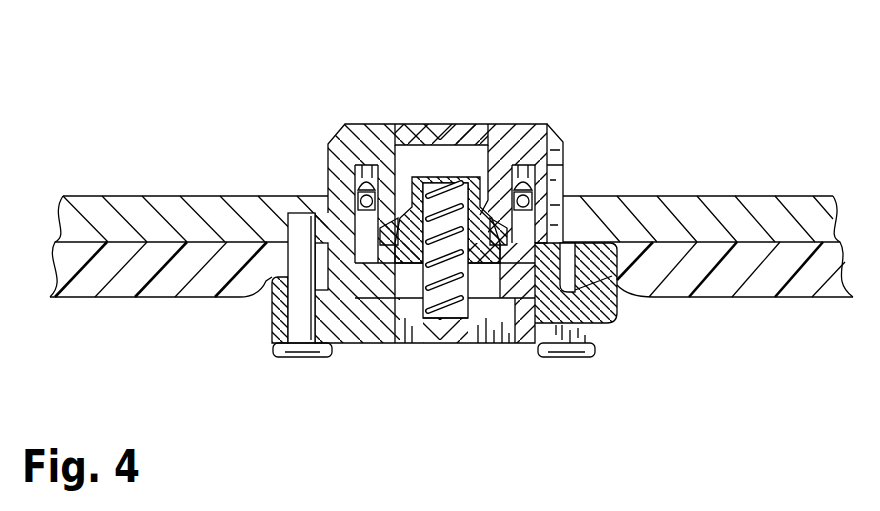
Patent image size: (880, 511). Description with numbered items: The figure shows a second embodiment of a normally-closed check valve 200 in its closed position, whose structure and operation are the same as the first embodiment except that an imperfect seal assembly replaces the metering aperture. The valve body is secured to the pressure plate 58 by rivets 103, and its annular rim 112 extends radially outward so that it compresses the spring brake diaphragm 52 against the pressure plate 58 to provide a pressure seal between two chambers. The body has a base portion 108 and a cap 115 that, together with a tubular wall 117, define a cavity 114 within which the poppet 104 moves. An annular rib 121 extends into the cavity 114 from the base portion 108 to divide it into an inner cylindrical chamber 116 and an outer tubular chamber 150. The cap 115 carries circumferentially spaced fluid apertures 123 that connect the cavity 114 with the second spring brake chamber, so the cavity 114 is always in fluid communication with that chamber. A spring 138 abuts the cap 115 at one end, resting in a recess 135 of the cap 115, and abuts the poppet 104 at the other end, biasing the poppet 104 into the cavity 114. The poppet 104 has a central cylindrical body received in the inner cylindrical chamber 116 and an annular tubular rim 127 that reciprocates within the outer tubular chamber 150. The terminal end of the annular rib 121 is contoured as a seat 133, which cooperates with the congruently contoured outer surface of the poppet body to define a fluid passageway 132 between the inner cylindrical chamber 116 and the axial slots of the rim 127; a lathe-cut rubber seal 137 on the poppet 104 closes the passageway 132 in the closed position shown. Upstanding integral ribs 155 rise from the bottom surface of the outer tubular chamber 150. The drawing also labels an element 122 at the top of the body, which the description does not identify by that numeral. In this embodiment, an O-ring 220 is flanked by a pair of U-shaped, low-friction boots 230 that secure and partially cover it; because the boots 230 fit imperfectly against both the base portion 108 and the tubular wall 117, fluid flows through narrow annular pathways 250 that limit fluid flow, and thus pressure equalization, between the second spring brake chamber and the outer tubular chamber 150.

The check valve 200 is at (186, 84).
The pressure plate 58 is at (158, 205).
The spring brake diaphragm 52 is at (137, 297).
The base portion 108 is at (493, 160).
The cap 122 is at (475, 138).
The inner cylindrical chamber 116 is at (459, 162).
The spring 138 is at (476, 175).
The fluid passageway 132 is at (405, 195).
The annular rib 121 is at (386, 205).
The recess 135 is at (436, 323).
The cap 115 is at (437, 335).
The cavity 114 is at (488, 283).
The poppet 104 is at (497, 305).
The fluid apertures 123 is at (512, 340).
The seat 133 is at (380, 245).
The seal 137 is at (393, 243).
The ribs 155 is at (370, 162).
The outer tubular chamber 150 is at (358, 168).
The O-ring 220 is at (360, 197).
The boots 230 is at (537, 196).
The annular pathways 250 is at (540, 192).
The annular tubular rim 127 is at (533, 215).
The annular rim 112 is at (272, 323).
The tubular wall 117 is at (326, 313).
The rivets 103 is at (297, 360).